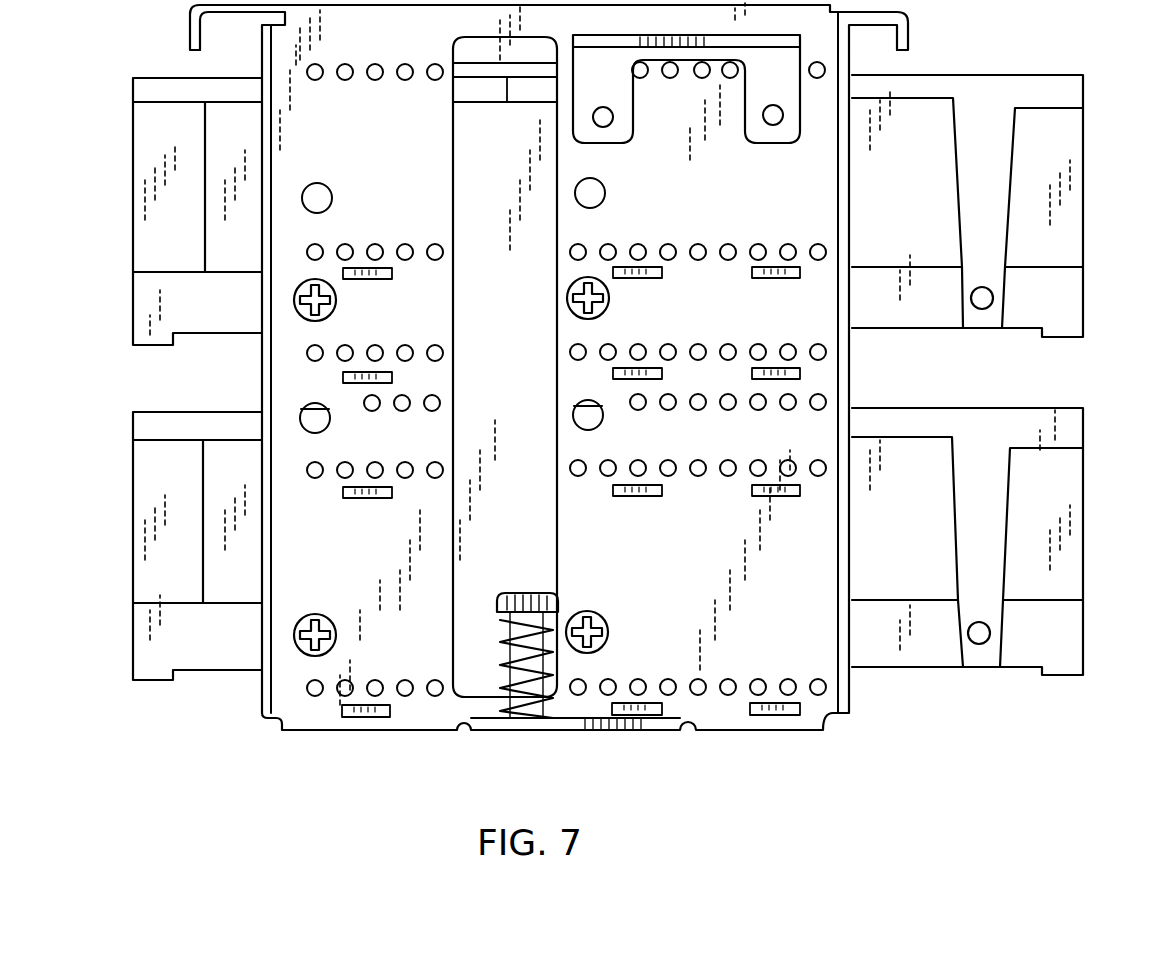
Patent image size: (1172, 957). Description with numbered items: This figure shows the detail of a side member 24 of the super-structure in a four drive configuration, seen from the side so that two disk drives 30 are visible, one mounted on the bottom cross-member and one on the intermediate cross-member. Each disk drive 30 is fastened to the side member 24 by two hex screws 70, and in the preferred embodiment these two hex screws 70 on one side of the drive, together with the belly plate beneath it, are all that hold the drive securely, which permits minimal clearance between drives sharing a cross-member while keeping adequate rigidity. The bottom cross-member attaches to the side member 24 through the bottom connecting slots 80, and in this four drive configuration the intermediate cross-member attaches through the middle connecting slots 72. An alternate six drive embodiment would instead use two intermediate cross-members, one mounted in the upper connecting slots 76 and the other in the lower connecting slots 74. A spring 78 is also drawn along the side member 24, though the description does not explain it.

The side member 24 is at (797, 641).
The disk drive 30 is at (940, 116).
The hex screws 70 is at (336, 303).
The middle connecting slots 72 is at (343, 378).
The lower connecting slots 74 is at (360, 496).
The upper connecting slots 76 is at (384, 268).
The spring 78 is at (532, 592).
The bottom connecting slots 80 is at (373, 717).